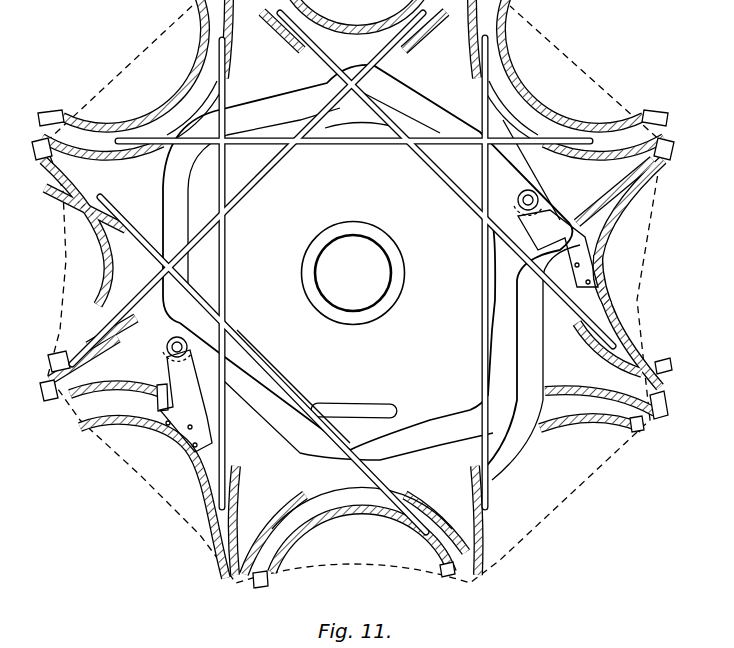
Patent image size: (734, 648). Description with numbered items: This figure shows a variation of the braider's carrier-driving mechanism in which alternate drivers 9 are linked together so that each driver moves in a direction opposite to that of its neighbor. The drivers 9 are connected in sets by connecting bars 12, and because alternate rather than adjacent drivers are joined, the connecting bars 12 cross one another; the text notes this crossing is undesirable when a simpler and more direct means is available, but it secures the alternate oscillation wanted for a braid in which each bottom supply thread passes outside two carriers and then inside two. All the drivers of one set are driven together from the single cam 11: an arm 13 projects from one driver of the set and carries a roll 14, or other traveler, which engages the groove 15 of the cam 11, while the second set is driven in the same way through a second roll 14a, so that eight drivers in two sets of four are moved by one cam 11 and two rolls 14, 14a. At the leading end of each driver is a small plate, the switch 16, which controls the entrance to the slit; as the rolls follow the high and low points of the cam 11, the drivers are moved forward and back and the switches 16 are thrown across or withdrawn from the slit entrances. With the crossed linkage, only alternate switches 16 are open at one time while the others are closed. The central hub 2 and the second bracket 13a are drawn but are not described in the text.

The hub shaft 2 is at (406, 270).
The driver 9 is at (353, 294).
The cam 11 is at (371, 272).
The connecting bar 12 is at (494, 352).
The arm 13 is at (186, 401).
The bracket plate 13a is at (558, 248).
The roll 14 is at (185, 341).
The roll 14a is at (539, 202).
The groove 15 is at (391, 273).
The switch 16 is at (657, 407).